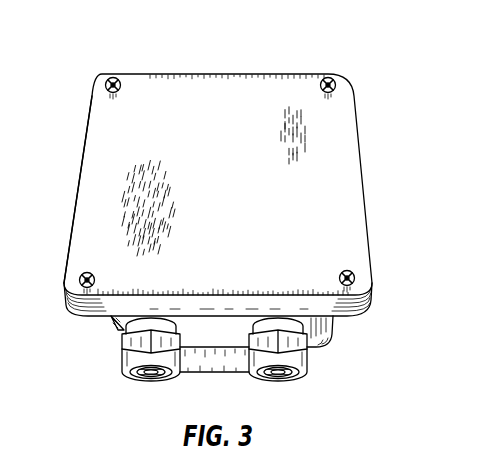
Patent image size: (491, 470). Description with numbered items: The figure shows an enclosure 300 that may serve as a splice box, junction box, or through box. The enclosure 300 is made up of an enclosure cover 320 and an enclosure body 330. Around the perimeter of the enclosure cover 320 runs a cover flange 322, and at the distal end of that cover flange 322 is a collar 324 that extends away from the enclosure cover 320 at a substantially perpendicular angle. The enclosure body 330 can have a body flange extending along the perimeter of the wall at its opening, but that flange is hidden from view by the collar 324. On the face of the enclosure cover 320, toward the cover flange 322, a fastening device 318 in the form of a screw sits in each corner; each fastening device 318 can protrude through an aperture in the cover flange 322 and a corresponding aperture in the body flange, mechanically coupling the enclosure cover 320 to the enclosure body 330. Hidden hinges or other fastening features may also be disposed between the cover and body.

The enclosure 300 is at (325, 52).
The fastening device 318 is at (117, 78).
The enclosure cover 320 is at (236, 199).
The cover flange 322 is at (77, 183).
The collar 324 is at (355, 310).
The enclosure body 330 is at (118, 322).